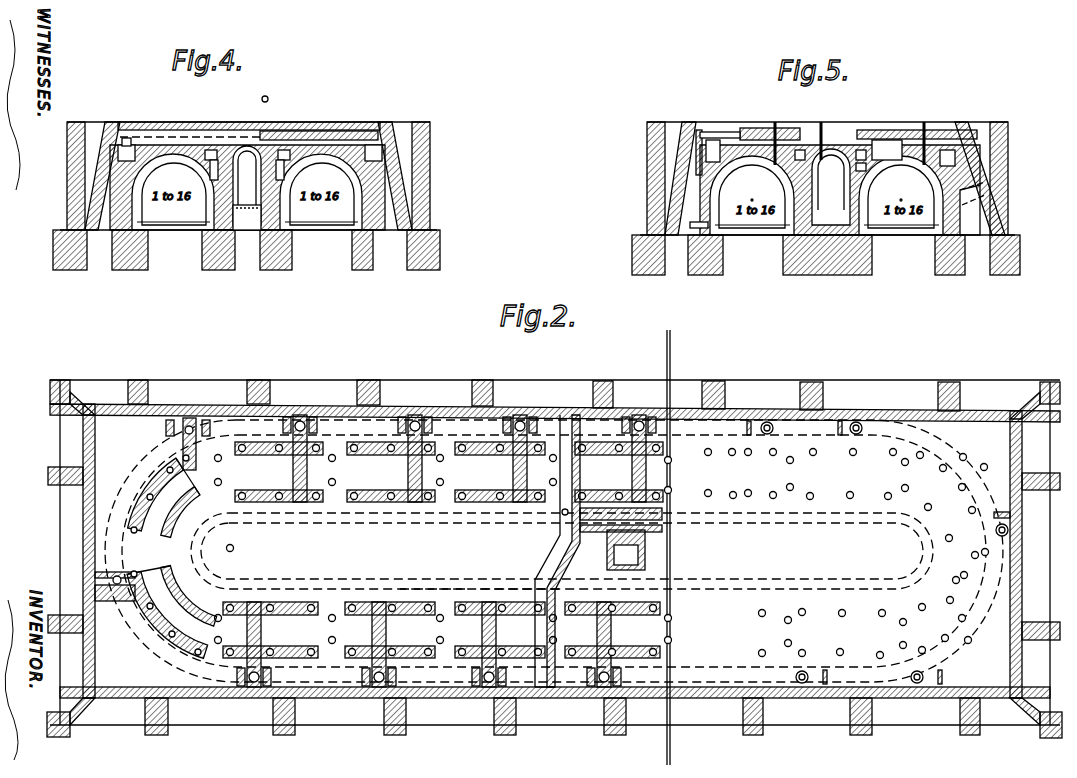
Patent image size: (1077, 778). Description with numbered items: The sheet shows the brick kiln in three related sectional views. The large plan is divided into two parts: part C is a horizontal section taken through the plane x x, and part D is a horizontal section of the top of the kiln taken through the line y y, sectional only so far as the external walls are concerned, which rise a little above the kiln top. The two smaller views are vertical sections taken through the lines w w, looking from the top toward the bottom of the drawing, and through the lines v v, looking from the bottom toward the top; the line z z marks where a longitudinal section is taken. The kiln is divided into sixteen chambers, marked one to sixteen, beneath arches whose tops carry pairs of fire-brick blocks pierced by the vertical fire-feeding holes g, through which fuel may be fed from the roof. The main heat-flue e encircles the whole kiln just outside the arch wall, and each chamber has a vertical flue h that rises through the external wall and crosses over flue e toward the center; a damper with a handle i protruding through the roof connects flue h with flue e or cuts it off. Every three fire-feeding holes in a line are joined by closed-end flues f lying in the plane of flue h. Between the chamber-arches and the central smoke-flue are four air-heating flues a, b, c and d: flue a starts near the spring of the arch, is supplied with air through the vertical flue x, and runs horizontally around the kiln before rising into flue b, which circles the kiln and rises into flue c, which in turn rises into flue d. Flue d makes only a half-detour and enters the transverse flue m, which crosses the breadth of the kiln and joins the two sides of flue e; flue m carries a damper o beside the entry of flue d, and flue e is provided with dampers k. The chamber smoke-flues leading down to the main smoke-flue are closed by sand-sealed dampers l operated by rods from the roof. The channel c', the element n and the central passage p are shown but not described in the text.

In FIG. 2, the horizontal section part C is at (345, 369).
In FIG. 2, the horizontal section of kiln top D is at (832, 363).
In FIG. 4, the heat-flue a is at (212, 150).
In FIG. 5, the heat-flue a is at (802, 150).
In FIG. 2, the heat-flue a is at (660, 520).
In FIG. 5, the heat-flue b is at (860, 150).
In FIG. 4, the heat-flue c is at (299, 114).
In FIG. 5, the heat-flue c is at (877, 132).
In FIG. 2, the heat-flue c is at (480, 589).
In FIG. 4, the lower channel c' is at (247, 217).
In FIG. 5, the lower channel c' is at (887, 150).
In FIG. 4, the heat-flue d is at (288, 130).
In FIG. 5, the heat-flue d is at (870, 130).
In FIG. 2, the heat-flue d is at (562, 553).
In FIG. 4, the main heat-flue e is at (128, 145).
In FIG. 5, the main heat-flue e is at (957, 150).
In FIG. 2, the main heat-flue e is at (554, 553).
In FIG. 5, the connecting flue f is at (735, 140).
In FIG. 2, the connecting flue f is at (330, 482).
In FIG. 5, the fire-feeding holes g is at (897, 200).
In FIG. 2, the fire-feeding holes g is at (190, 558).
In FIG. 5, the vertical flue h is at (711, 226).
In FIG. 2, the vertical flue h is at (640, 415).
In FIG. 5, the damper handle i is at (713, 140).
In FIG. 2, the damper handle i is at (118, 572).
In FIG. 2, the damper k is at (1000, 524).
In FIG. 5, the damper l is at (820, 125).
In FIG. 2, the transverse flue m is at (540, 698).
In FIG. 4, the pipe n is at (363, 130).
In FIG. 2, the pipe n is at (565, 415).
In FIG. 4, the damper o is at (265, 145).
In FIG. 2, the damper o is at (562, 511).
In FIG. 4, the central passage p is at (238, 80).
In FIG. 5, the central passage p is at (831, 182).
In FIG. 5, the vertical flue x is at (1045, 135).
In FIG. 2, the vertical flue x is at (645, 560).
In FIG. 4, the section line y is at (470, 122).
In FIG. 2, the section line z is at (1070, 592).
In FIG. 2, the section line w is at (570, 770).
In FIG. 2, the section line v is at (638, 777).